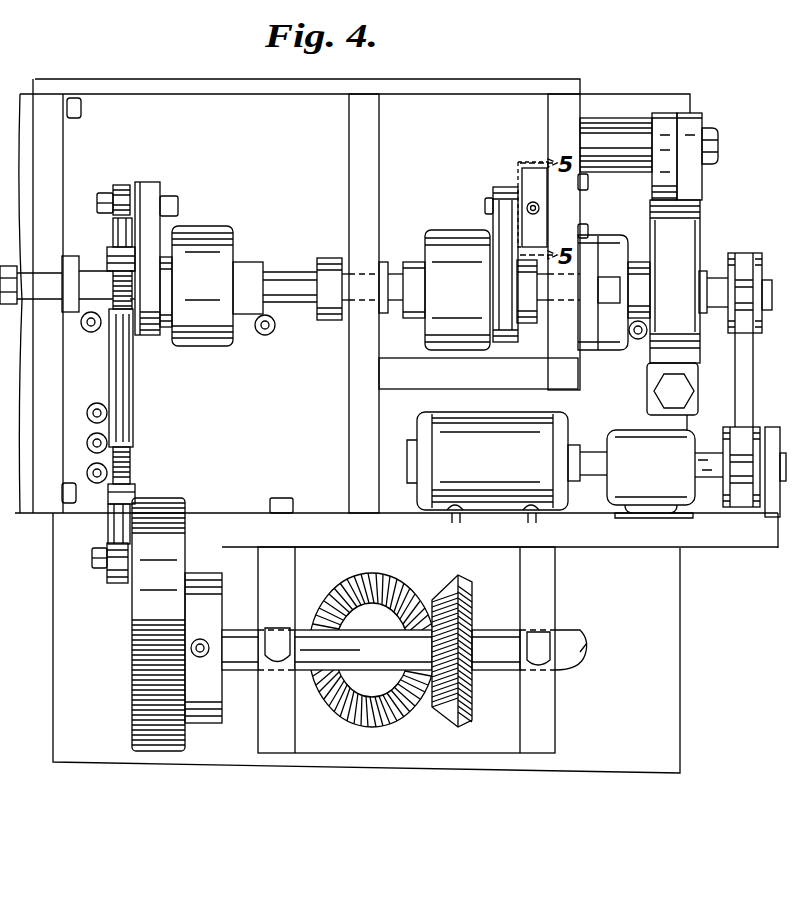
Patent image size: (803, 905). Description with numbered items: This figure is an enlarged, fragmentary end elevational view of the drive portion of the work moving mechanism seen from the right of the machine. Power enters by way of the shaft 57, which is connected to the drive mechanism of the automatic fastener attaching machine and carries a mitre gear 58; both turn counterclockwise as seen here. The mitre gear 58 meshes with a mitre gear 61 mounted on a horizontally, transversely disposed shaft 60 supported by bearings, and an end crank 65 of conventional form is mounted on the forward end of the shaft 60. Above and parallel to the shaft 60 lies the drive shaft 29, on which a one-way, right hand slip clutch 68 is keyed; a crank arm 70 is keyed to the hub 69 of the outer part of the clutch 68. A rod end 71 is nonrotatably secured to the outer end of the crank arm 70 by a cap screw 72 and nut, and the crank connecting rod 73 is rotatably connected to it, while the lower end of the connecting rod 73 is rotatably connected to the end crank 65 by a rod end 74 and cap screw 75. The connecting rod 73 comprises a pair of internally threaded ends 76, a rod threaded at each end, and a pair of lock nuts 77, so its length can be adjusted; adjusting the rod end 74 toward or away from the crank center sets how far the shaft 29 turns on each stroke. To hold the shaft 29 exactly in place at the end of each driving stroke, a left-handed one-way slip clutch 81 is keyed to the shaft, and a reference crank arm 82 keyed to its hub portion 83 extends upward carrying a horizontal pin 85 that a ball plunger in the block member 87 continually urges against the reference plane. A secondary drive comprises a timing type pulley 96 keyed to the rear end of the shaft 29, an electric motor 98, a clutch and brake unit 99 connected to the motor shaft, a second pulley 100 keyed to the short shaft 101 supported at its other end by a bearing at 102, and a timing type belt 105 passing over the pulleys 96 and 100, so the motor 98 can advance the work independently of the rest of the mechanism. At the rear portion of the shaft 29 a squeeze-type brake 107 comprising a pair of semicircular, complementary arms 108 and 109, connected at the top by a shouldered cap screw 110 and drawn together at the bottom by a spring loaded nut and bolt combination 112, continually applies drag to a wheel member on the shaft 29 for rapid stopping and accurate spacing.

The drive shaft 29 is at (287, 272).
The shaft 57 is at (402, 654).
The mitre gear 58 is at (418, 587).
The shaft 60 is at (238, 630).
The mitre gear 61 is at (473, 588).
The end crank 65 is at (180, 500).
The one-way, right hand slip clutch 68 is at (230, 230).
The hub 69 is at (167, 328).
The crank arm 70 is at (155, 186).
The rod end 71 is at (114, 190).
The cap screw 72 is at (97, 203).
The crank connecting rod 73 is at (134, 425).
The rod end 74 is at (108, 578).
The cap screw 75 is at (94, 562).
The internally threaded ends 76 is at (113, 230).
The lock nuts 77 is at (110, 260).
The one-way slip clutch 81 is at (440, 236).
The crank arm 82 is at (505, 187).
The hub portion 83 is at (527, 324).
The horizontal pin 85 is at (485, 205).
The rectangular block member 87 is at (540, 226).
The timing type pulley 96 is at (760, 255).
The electric motor 98 is at (425, 414).
The clutch and brake unit 99 is at (627, 430).
The second pulley 100 is at (760, 432).
The short shaft 101 is at (707, 455).
The bearing 102 is at (765, 512).
The timing type belt 105 is at (733, 370).
The squeeze-type brake 107 is at (710, 222).
The arm 108 is at (705, 186).
The arm 109 is at (653, 185).
The shouldered cap screw 110 is at (718, 148).
The spring loaded nut and bolt combination 112 is at (663, 388).